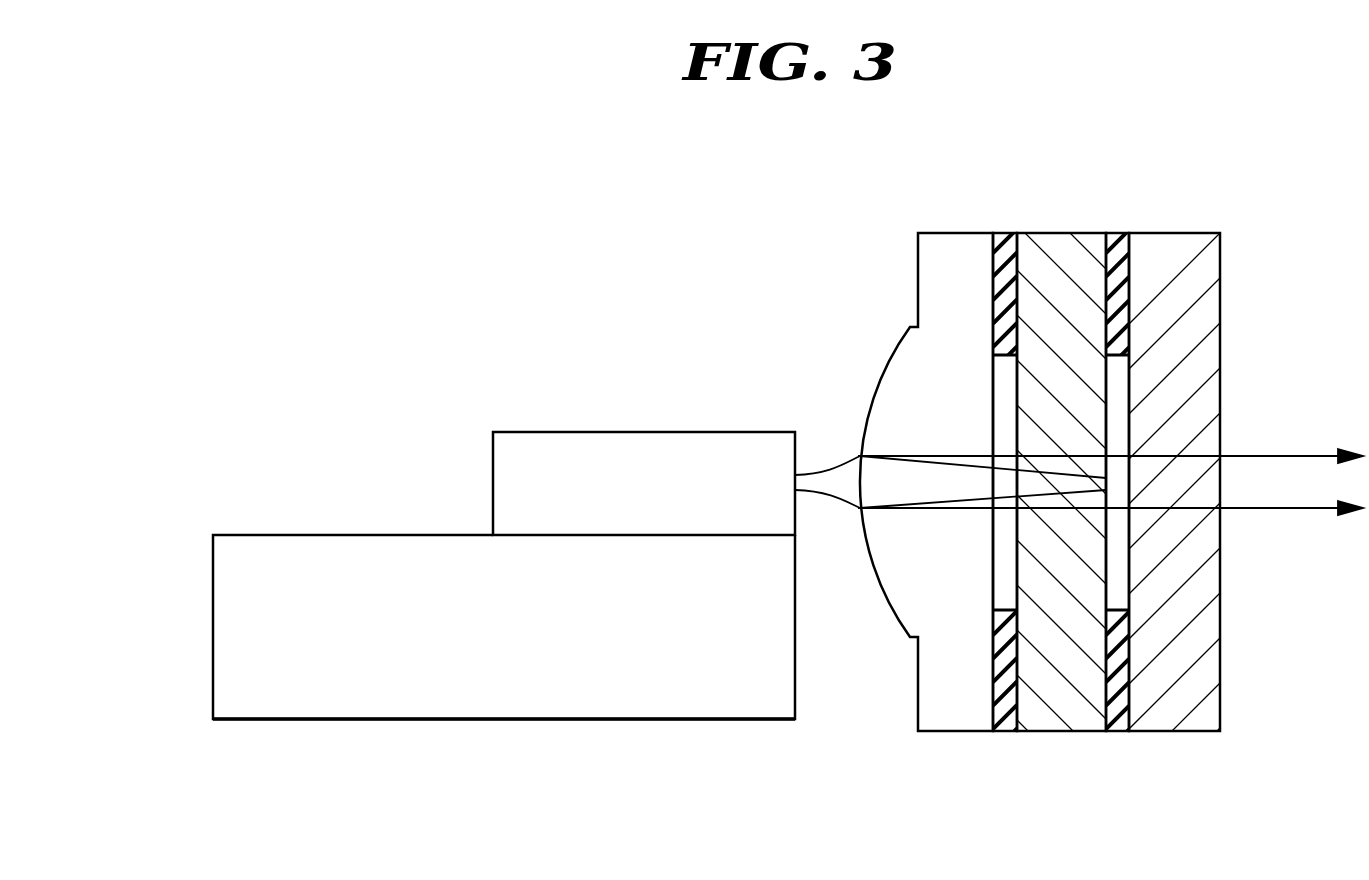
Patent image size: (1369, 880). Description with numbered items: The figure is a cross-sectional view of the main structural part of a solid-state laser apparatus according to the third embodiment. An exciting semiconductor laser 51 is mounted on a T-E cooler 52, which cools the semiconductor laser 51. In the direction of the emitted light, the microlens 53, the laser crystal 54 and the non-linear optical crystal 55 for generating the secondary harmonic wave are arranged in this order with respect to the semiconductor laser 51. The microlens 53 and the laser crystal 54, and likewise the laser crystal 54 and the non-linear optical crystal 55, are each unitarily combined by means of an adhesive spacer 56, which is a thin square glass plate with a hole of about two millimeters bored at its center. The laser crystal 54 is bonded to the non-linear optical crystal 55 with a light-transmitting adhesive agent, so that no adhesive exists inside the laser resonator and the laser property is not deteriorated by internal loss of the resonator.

The exciting semiconductor laser 51 is at (567, 442).
The T-E cooler 52 is at (655, 705).
The microlens 53 is at (950, 715).
The laser crystal 54 is at (1063, 715).
The non-linear optical crystal 55 is at (1177, 715).
The adhesive spacer 56 is at (1004, 250).